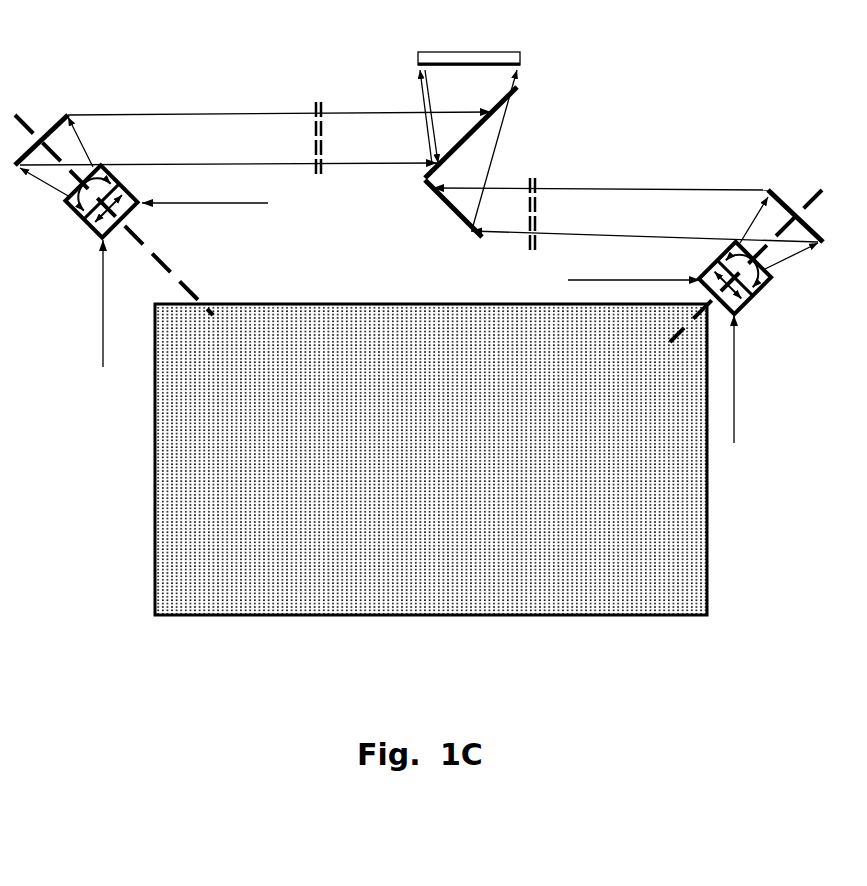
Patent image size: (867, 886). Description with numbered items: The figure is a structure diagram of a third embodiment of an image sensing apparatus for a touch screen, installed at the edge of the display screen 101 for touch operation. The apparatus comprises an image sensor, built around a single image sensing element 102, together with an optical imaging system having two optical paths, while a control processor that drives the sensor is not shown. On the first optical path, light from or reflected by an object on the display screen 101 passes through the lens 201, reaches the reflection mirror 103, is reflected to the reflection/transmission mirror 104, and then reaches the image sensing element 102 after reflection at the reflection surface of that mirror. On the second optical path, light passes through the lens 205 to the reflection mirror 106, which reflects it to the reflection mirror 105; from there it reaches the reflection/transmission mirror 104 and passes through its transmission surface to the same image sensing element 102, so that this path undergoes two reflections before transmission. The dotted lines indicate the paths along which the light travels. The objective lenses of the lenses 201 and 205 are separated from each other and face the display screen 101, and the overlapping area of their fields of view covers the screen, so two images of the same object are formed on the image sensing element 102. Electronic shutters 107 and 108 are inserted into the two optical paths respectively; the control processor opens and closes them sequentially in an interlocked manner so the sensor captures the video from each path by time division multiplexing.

The display screen 101 is at (193, 443).
The image sensing element 102 is at (467, 52).
The reflection mirror 103 is at (53, 122).
The reflection/transmission mirror 104 is at (430, 110).
The reflection mirror 105 is at (455, 213).
The reflection mirror 106 is at (782, 200).
The electronic shutter 107 is at (318, 100).
The electronic shutter 108 is at (530, 177).
The lens 201 is at (85, 222).
The lens 205 is at (752, 297).